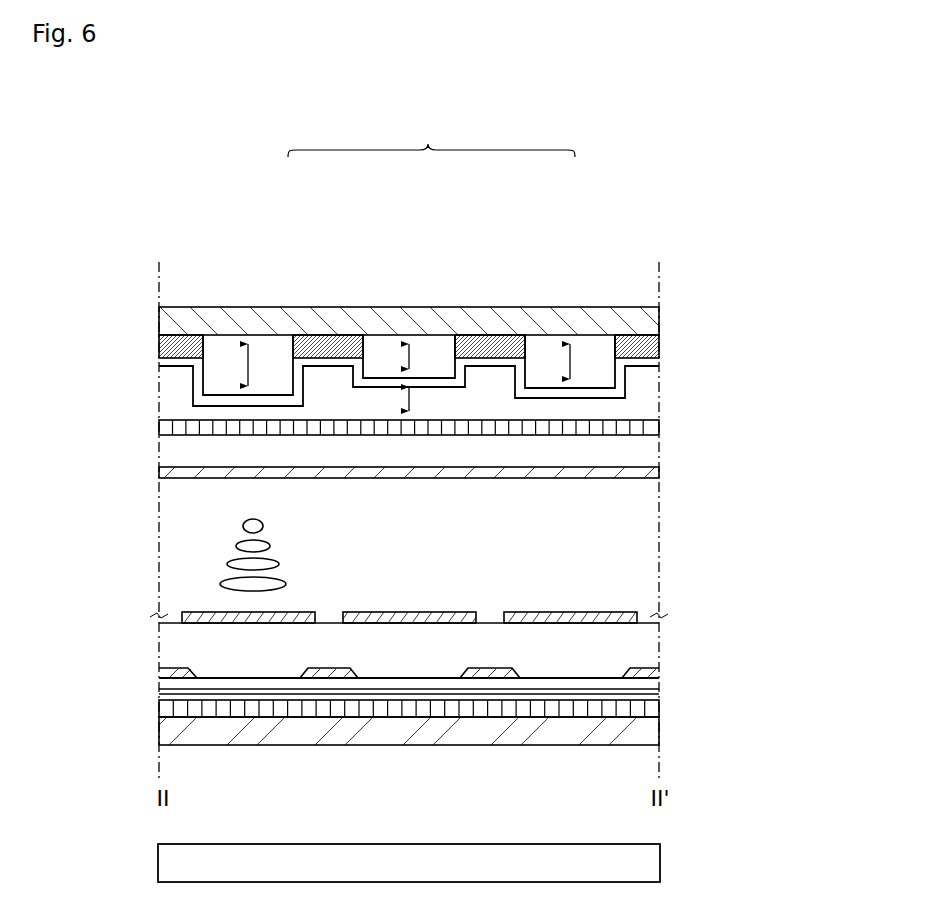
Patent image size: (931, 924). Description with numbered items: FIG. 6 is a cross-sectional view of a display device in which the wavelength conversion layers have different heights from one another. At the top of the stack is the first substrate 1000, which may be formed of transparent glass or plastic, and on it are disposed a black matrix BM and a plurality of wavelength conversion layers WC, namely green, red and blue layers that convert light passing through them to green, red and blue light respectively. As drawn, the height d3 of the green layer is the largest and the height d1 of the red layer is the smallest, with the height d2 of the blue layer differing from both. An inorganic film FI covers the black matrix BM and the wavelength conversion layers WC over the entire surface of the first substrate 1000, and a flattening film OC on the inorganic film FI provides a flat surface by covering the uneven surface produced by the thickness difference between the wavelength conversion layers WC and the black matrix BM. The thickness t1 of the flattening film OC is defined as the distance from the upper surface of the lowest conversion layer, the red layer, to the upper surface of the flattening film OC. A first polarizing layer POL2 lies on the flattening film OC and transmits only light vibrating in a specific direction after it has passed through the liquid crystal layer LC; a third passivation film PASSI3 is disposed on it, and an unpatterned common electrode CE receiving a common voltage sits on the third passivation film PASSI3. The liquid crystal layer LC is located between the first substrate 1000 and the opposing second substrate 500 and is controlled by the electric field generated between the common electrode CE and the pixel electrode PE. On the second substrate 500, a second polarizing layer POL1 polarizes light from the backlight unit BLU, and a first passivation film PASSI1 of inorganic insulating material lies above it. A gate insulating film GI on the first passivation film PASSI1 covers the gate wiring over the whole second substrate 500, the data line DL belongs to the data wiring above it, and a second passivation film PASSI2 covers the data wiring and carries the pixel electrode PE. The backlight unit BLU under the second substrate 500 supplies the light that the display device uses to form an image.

The first substrate 1000 is at (662, 316).
The black matrix BM is at (190, 343).
The wavelength conversion layer WC is at (431, 136).
The inorganic film FI is at (623, 378).
The height of the red wavelength conversion layer d1 is at (399, 353).
The height of the blue wavelength conversion layer d2 is at (576, 358).
The height of the green wavelength conversion layer d3 is at (249, 356).
The thickness of the flattening film t1 is at (393, 401).
The flattening film OC is at (653, 405).
The first polarizing layer POL2 is at (157, 432).
The third passivation film PASSI3 is at (653, 448).
The common electrode CE is at (655, 473).
The liquid crystal layer LC is at (175, 550).
The pixel electrode PE is at (178, 621).
The second passivation film PASSI2 is at (647, 648).
The data line DL is at (647, 672).
The gate insulating film GI is at (647, 687).
The first passivation film PASSI1 is at (647, 702).
The second polarizing layer POL1 is at (647, 708).
The second substrate 500 is at (538, 735).
The backlight unit BLU is at (409, 863).